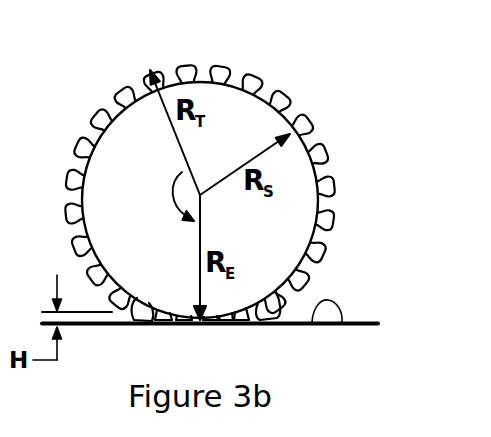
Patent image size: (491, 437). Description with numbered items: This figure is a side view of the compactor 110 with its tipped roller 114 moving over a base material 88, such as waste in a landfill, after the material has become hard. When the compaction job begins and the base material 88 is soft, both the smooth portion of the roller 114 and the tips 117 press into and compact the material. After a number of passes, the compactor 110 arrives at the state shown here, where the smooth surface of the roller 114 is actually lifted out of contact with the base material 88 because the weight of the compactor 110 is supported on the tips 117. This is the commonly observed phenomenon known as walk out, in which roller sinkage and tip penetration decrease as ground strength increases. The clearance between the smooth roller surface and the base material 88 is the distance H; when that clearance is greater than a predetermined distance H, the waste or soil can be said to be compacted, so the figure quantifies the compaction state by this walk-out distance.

The compactor 110 is at (244, 170).
The tipped roller 114 is at (313, 242).
The tips 117 is at (313, 172).
The base material 88 is at (342, 323).